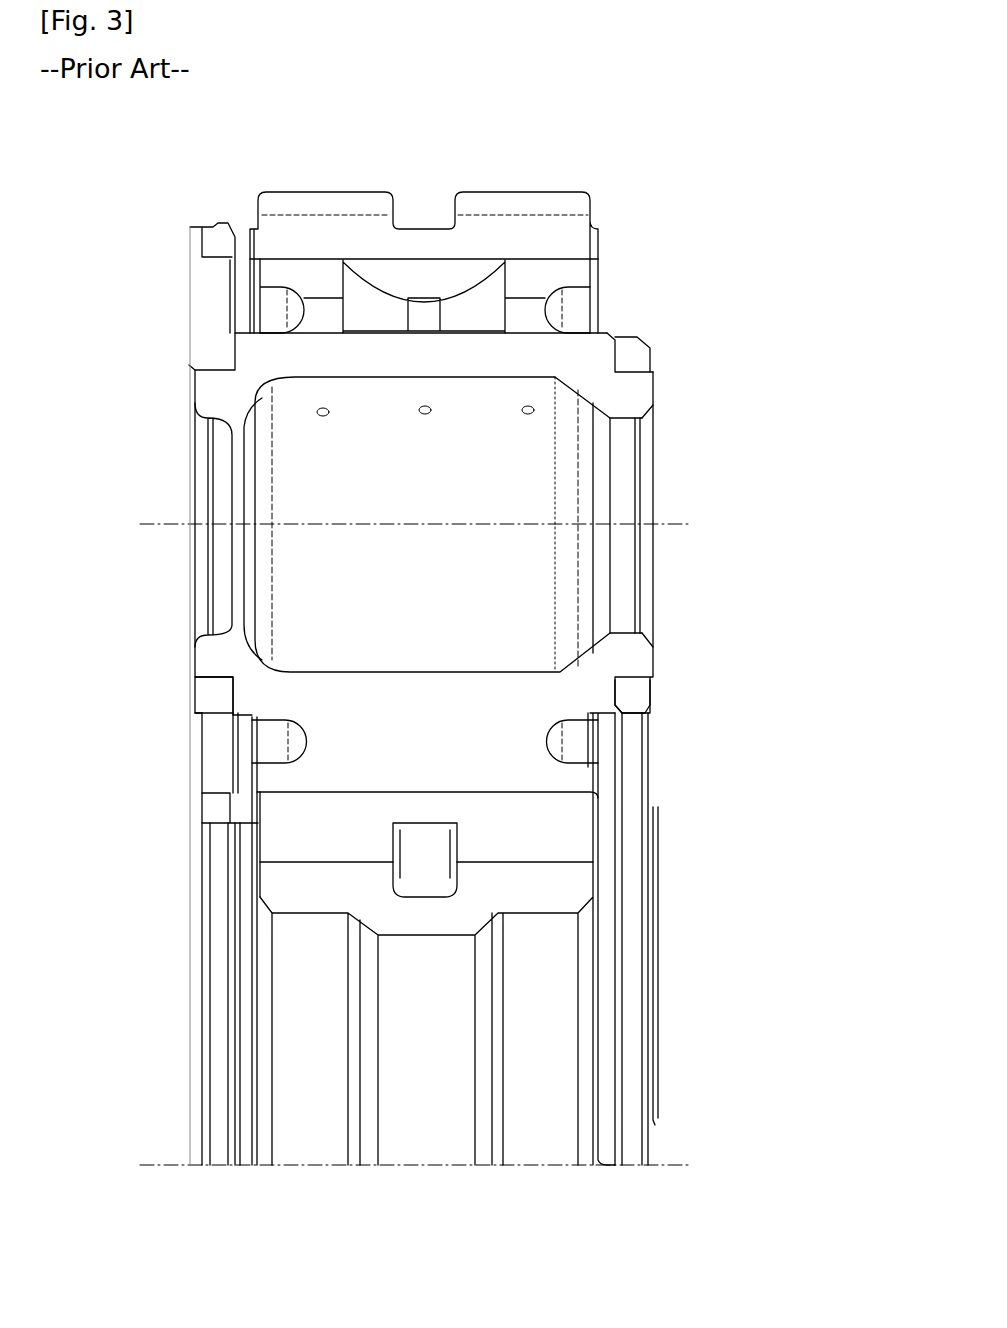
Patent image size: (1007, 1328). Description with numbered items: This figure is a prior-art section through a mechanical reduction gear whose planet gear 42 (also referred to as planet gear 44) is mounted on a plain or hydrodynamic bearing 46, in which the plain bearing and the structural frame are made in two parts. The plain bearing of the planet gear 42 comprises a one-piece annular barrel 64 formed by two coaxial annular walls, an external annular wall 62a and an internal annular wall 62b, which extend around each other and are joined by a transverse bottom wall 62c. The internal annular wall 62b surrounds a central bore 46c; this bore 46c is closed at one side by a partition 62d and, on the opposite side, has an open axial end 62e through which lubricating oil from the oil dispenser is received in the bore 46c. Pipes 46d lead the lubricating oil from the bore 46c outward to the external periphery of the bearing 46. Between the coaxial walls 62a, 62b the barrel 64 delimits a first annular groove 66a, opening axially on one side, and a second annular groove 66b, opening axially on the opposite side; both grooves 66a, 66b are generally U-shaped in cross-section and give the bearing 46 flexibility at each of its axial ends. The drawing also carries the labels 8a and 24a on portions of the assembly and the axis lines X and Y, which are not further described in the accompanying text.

The planet gear 42 is at (591, 190).
The external annular wall 62a is at (277, 270).
The internal annular wall 62b is at (262, 352).
The housing 46 is at (431, 696).
The bore 46c is at (448, 524).
The pipes 46d is at (323, 416).
The axial end 62e is at (638, 420).
The partition 62d is at (233, 515).
The transverse bottom wall 62c is at (528, 712).
The first annular groove 66a is at (268, 745).
The second annular groove 66b is at (582, 742).
The one-piece annular barrel 64 is at (455, 718).
The shaft portion 8a is at (350, 796).
The planet gear 44 is at (577, 830).
The bearing portion 24a is at (355, 768).
The axis X is at (632, 1168).
The axis Y is at (682, 524).